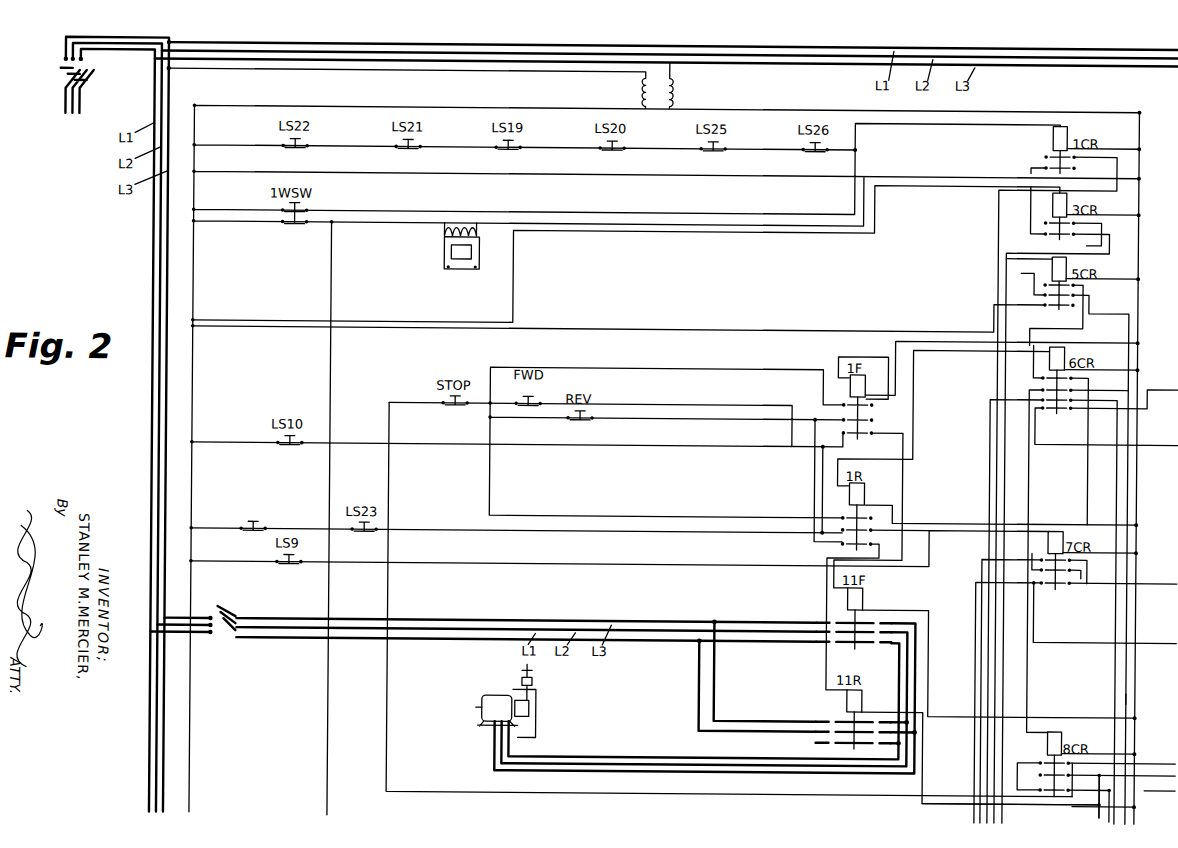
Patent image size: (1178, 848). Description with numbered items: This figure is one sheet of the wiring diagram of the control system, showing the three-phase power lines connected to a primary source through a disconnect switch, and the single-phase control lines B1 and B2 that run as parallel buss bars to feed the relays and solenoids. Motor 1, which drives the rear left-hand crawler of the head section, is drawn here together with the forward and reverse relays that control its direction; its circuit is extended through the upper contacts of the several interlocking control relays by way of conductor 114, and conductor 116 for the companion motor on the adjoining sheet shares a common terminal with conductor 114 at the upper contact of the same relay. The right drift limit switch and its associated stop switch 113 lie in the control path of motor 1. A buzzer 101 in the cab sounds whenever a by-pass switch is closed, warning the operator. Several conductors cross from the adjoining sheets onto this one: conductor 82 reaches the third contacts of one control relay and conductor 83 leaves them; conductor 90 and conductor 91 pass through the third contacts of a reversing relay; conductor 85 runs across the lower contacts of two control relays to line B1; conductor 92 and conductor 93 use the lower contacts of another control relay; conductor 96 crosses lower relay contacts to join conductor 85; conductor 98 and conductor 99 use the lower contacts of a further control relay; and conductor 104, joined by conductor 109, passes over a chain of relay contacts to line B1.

The motor 1 is at (500, 708).
The buzzer 101 is at (459, 272).
The stop switch 113 is at (257, 525).
The conductor 114 is at (391, 739).
The conductor 83 is at (990, 476).
The conductor 82 is at (1130, 494).
The conductor 85 is at (1119, 671).
The conductor 90 is at (1130, 696).
The conductor 91 is at (978, 635).
The conductor 92 is at (1149, 384).
The conductor 93 is at (1156, 436).
The conductor 96 is at (1148, 790).
The conductor 98 is at (1147, 579).
The conductor 99 is at (1150, 639).
The conductor 104 is at (1058, 810).
The conductor 109 is at (1151, 771).
The conductor 116 is at (1139, 759).
The control line B1 is at (194, 296).
The control line B2 is at (1137, 268).